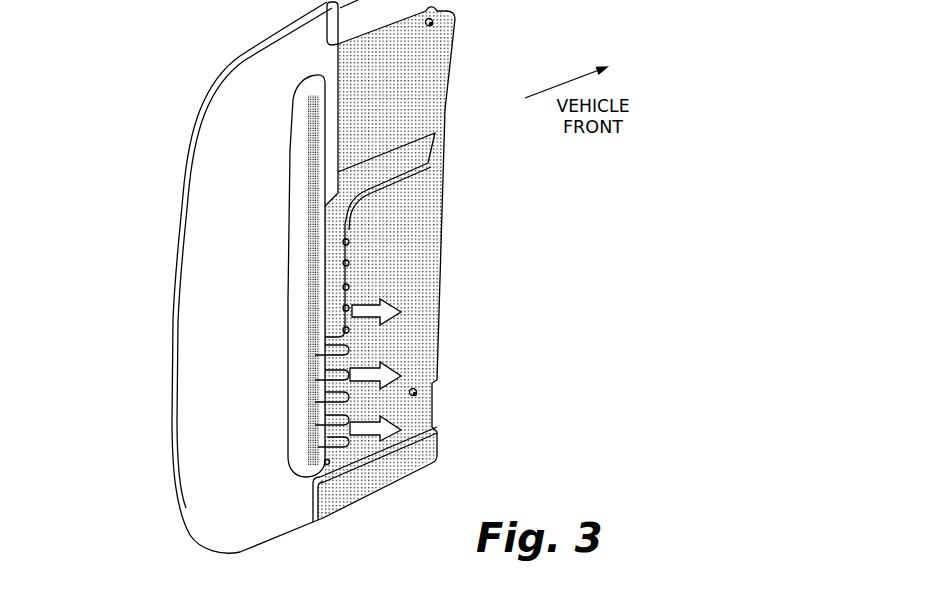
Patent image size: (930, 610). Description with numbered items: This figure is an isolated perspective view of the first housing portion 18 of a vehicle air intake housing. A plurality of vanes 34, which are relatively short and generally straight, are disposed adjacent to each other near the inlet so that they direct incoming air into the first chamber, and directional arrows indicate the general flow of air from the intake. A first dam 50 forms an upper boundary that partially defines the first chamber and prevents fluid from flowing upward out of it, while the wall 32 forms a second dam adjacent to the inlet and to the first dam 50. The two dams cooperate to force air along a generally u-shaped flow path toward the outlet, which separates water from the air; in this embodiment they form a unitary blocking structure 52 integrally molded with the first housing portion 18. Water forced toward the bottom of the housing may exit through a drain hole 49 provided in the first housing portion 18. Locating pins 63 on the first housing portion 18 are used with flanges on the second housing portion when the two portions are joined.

The first housing portion 18 is at (164, 293).
The wall 32 is at (347, 252).
The vanes 34 is at (346, 264).
The drain hole 49 is at (327, 465).
The first dam 50 is at (443, 152).
The unitary blocking structure 52 is at (408, 184).
The locating pins 63 is at (432, 23).